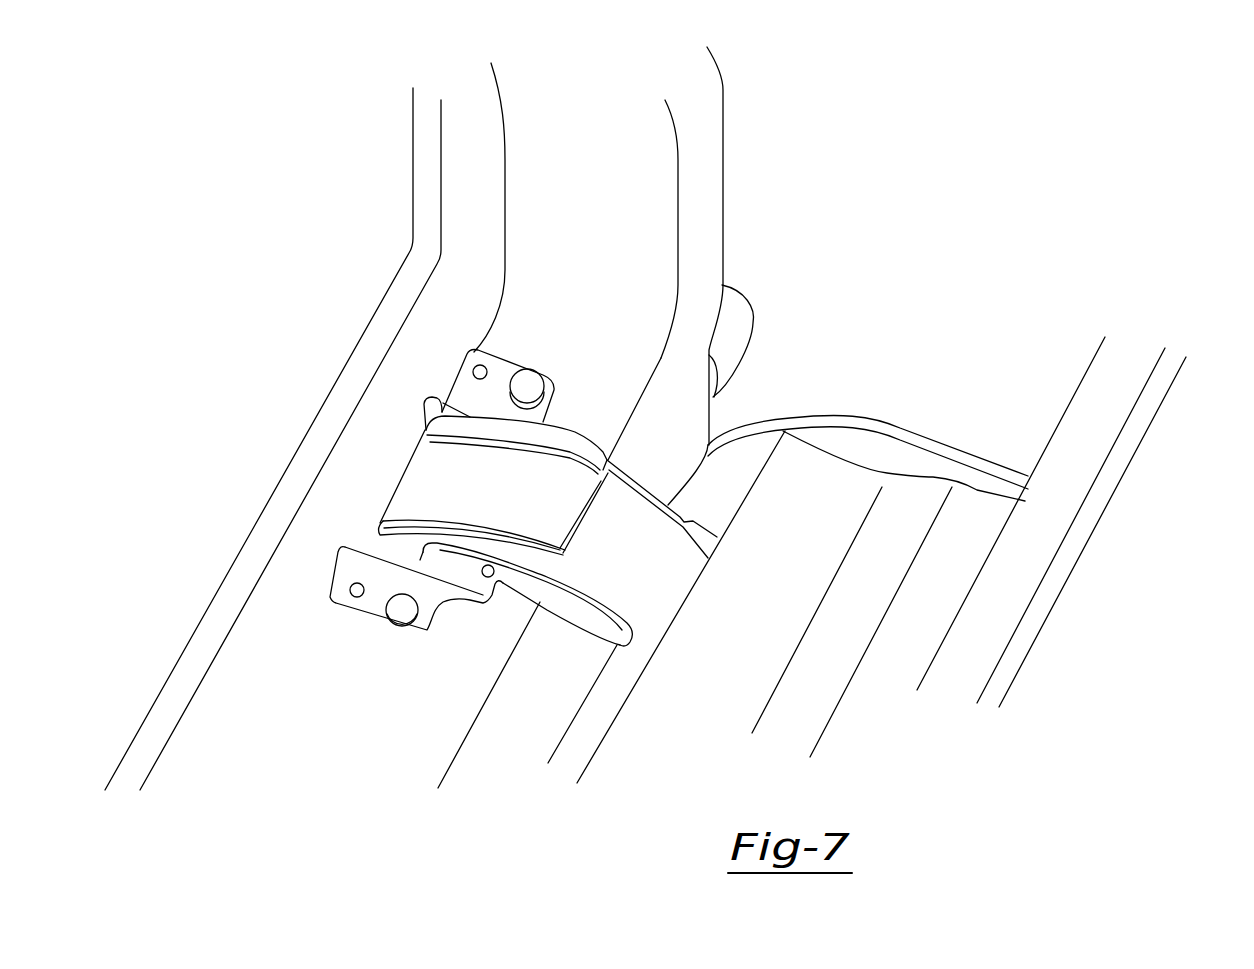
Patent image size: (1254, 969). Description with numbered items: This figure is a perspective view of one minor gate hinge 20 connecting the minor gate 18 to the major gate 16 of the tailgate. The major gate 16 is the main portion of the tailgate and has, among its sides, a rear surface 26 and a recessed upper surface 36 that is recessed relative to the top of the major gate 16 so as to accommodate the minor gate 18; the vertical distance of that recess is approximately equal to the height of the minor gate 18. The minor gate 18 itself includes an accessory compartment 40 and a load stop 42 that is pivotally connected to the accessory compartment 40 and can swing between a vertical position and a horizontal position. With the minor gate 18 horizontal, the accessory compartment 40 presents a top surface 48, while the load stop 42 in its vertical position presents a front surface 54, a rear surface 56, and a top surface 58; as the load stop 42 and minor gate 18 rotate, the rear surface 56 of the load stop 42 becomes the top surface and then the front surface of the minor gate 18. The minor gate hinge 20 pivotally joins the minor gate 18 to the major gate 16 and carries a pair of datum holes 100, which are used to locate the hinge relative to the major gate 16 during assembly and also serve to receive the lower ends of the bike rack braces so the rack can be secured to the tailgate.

The major gate 16 is at (332, 366).
The minor gate 18 is at (1155, 305).
The minor gate hinge 20 is at (410, 478).
The rear side or surface 26 is at (693, 157).
The recessed upper surface 36 is at (217, 723).
The accessory compartment 40 is at (903, 406).
The load stop 42 is at (1160, 440).
The top side or surface 48 is at (973, 531).
The front side or surface 54 is at (1063, 382).
The rear side or surface 56 is at (1080, 591).
The top side or surface 58 is at (1064, 496).
The datum holes 100 is at (482, 365).